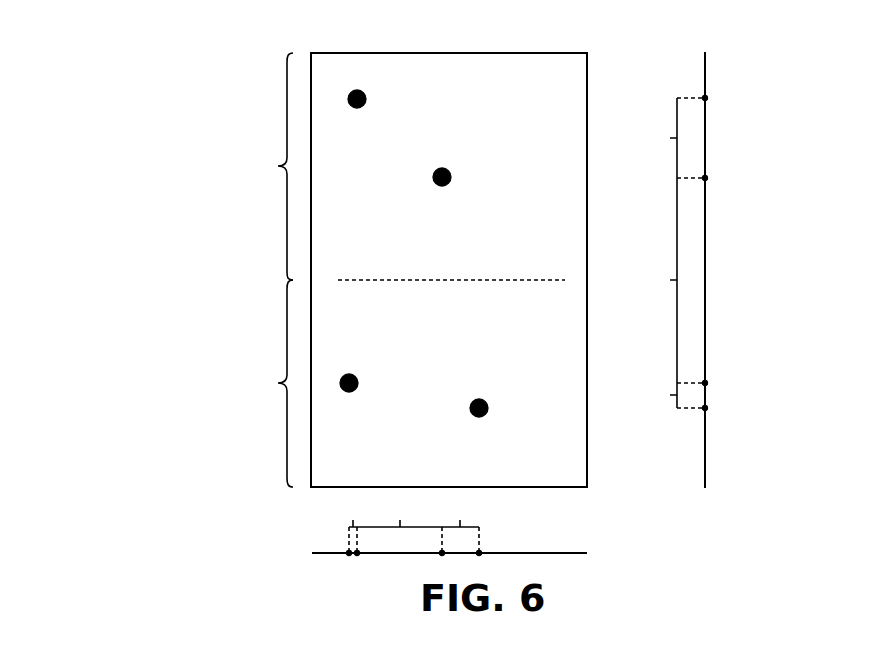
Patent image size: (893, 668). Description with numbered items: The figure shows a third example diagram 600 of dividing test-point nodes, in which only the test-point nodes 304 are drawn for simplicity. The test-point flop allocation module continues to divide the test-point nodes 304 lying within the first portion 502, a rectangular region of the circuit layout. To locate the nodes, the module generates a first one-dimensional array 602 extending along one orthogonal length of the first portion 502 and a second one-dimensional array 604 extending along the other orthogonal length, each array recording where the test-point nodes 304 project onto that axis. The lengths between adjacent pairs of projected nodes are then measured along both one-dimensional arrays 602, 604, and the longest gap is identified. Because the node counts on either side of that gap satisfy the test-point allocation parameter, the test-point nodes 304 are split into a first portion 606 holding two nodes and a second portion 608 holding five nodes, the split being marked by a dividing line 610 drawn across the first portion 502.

The third example diagram 600 is at (146, 71).
The first portion 502 is at (352, 52).
The test-point nodes 304 is at (362, 92).
The first portion 606 is at (264, 166).
The second portion 608 is at (264, 383).
The dividing line 610 is at (475, 280).
The first one-dimensional array 602 is at (706, 77).
The second one-dimensional array 604 is at (563, 553).